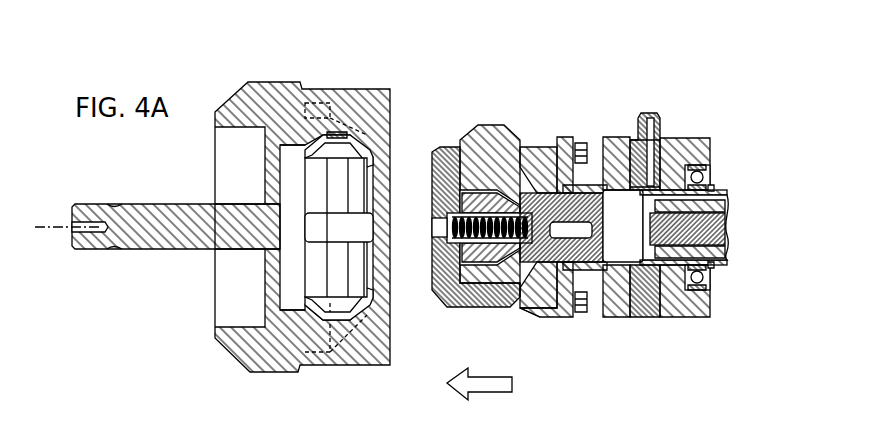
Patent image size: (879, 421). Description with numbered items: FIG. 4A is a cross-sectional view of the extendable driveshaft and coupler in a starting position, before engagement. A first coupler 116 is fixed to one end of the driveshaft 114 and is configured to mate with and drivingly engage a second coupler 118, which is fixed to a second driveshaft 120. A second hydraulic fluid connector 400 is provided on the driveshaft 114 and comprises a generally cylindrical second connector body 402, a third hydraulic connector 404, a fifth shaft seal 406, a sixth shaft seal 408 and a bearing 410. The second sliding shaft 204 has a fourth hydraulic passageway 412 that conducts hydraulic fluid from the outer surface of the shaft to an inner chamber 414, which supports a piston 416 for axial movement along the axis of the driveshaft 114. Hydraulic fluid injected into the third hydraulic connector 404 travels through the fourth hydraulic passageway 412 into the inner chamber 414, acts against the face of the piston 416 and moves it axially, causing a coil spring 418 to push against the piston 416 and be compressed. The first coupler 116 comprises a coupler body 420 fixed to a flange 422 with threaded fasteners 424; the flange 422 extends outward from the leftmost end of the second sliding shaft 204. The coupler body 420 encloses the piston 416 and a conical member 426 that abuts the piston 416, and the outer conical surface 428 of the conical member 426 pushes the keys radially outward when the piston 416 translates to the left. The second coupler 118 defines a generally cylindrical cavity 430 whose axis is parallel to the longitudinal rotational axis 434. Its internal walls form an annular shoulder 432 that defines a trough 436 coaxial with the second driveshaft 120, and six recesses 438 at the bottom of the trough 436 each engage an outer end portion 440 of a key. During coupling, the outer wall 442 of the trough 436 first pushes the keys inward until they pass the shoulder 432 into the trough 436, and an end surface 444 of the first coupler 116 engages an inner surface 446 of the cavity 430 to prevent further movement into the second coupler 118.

The driveshaft 114 is at (733, 222).
The first coupler 116 is at (578, 66).
The second coupler 118 is at (222, 91).
The second driveshaft 120 is at (140, 251).
The second sliding shaft 204 is at (714, 192).
The second hydraulic fluid connector 400 is at (688, 73).
The second connector body 402 is at (680, 138).
The third hydraulic connector 404 is at (653, 115).
The fifth shaft seal 406 is at (683, 180).
The sixth shaft seal 408 is at (635, 160).
The bearing 410 is at (710, 187).
The fourth hydraulic passageway 412 is at (712, 198).
The inner chamber 414 is at (626, 245).
The piston 416 is at (538, 312).
The coil spring 418 is at (470, 195).
The coupler body 420 is at (450, 308).
The flange 422 is at (570, 315).
The threaded fasteners 424 is at (582, 147).
The conical member 426 is at (500, 243).
The outer conical surface 428 is at (495, 250).
The cavity 430 is at (334, 267).
The shoulder 432 is at (375, 155).
The longitudinal rotational axis 434 is at (80, 203).
The trough 436 is at (338, 158).
The recesses 438 is at (313, 156).
The outer end portion 440 is at (462, 200).
The outer wall 442 is at (376, 132).
The end surface 444 is at (436, 190).
The inner surface 446 is at (327, 133).